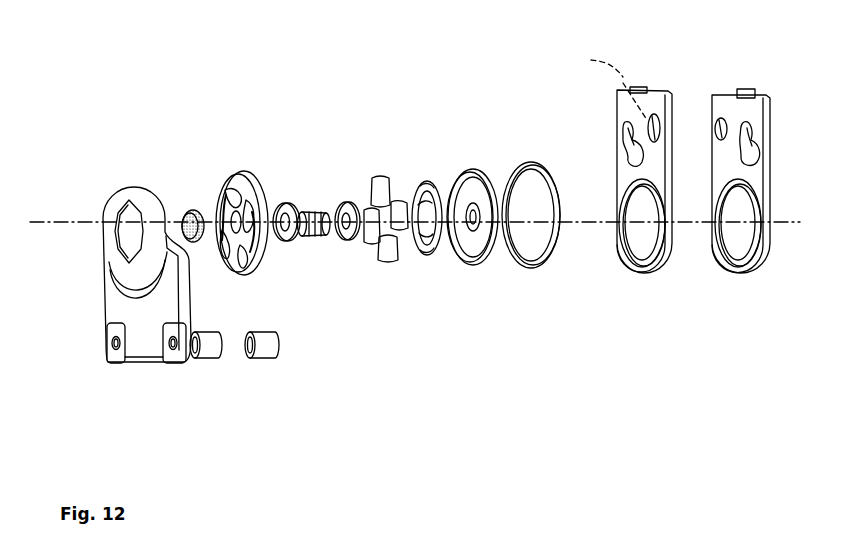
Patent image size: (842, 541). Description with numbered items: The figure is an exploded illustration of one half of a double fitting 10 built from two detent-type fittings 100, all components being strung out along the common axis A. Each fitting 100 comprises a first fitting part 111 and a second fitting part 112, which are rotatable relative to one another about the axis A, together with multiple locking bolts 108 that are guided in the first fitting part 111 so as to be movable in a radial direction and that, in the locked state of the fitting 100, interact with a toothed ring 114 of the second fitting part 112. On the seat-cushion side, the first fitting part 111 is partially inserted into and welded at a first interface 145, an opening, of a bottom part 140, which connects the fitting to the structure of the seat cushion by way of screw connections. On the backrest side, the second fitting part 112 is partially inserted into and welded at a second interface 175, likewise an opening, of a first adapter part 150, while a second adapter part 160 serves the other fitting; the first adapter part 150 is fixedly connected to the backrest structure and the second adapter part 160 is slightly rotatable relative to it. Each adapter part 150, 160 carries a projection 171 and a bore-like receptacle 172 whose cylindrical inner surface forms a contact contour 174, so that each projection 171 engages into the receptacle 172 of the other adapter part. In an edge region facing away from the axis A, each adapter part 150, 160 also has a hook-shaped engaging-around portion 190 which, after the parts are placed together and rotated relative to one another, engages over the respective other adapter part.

The axis A is at (46, 221).
The double fitting 10 is at (256, 128).
The fitting 100 is at (375, 122).
The locking bolt 108 is at (384, 262).
The first fitting part 111 is at (250, 262).
The second fitting part 112 is at (462, 257).
The toothed ring 114 is at (458, 192).
The bottom part 140 is at (137, 347).
The first interface 145 is at (118, 233).
The first adapter part 150 is at (620, 110).
The second adapter part 160 is at (712, 107).
The projection 171 is at (728, 60).
The bore-like receptacle 172 is at (631, 155).
The contact contour 174 is at (625, 137).
The second interface 175 is at (639, 240).
The hook-shaped engaging-around portion 190 is at (638, 87).